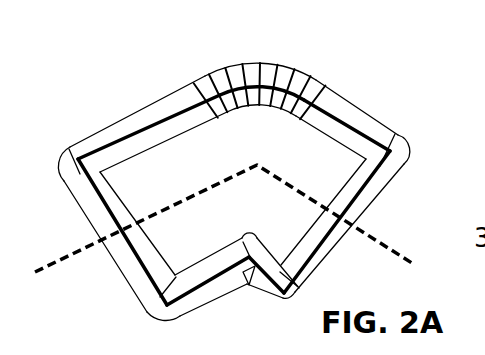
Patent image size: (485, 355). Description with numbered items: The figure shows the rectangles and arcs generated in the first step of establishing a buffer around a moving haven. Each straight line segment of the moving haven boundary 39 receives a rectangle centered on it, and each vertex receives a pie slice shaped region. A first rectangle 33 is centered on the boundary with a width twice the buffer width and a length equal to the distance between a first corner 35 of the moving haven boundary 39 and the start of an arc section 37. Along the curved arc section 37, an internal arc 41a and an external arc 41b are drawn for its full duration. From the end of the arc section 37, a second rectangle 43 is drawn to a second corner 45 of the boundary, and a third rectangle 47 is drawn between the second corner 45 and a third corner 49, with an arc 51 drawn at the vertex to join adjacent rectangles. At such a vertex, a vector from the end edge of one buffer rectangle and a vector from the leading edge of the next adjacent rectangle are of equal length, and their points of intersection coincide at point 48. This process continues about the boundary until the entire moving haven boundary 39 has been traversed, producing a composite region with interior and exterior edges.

The first rectangle 33 is at (160, 106).
The first corner 35 is at (76, 177).
The arc section 37 is at (267, 82).
The moving haven boundary 39 is at (193, 104).
The internal arc 41a is at (281, 85).
The external arc 41b is at (292, 106).
The second rectangle 43 is at (347, 106).
The second corner 45 is at (385, 137).
The third rectangle 47 is at (389, 180).
The point 48 is at (250, 276).
The third corner 49 is at (294, 297).
The arc 51 is at (409, 144).